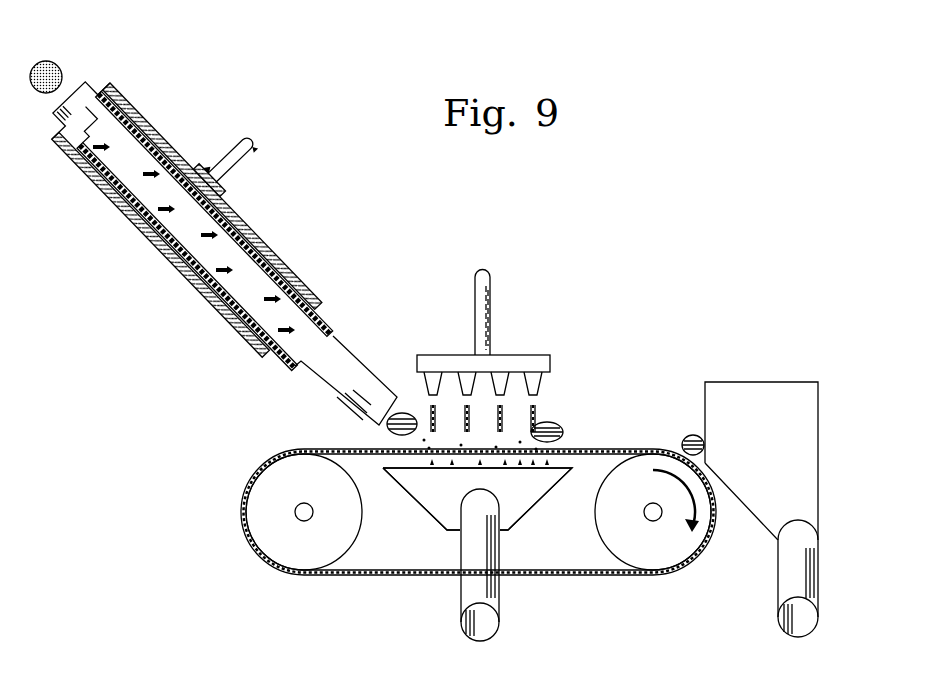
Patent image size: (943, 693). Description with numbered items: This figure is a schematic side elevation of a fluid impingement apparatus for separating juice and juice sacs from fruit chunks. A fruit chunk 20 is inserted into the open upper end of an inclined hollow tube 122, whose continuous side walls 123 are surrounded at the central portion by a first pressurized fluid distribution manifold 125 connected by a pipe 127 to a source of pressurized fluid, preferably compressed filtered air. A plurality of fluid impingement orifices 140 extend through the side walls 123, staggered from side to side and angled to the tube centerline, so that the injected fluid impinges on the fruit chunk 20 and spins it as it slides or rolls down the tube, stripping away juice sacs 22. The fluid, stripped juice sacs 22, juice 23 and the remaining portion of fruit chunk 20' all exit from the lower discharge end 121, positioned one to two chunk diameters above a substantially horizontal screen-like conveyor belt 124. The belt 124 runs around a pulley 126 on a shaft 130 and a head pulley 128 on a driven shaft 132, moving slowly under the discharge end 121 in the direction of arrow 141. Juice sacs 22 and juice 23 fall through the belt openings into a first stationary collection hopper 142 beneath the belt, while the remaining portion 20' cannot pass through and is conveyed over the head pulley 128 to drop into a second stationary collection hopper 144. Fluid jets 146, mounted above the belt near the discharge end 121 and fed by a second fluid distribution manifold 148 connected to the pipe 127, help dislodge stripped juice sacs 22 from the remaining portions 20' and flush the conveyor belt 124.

The fruit chunk 20 is at (47, 50).
The remaining portion of fruit chunk 20' is at (617, 438).
The juice sacs 22 is at (483, 468).
The juice 23 is at (483, 468).
The lower end (discharge end) of tube 121 is at (378, 436).
The inclined hollow tube 122 is at (320, 380).
The side walls 123 is at (318, 322).
The screen-like conveyor belt 124 is at (262, 457).
The first pressurized fluid distribution manifold 125 is at (130, 208).
The pulley 126 is at (270, 546).
The pipe 127 is at (238, 155).
The head pulley 128 is at (672, 556).
The shaft 130 is at (295, 512).
The shaft 132 is at (653, 521).
The fluid impingement orifices 140 is at (167, 165).
The arrow 141 is at (663, 470).
The first stationary collection hopper 142 is at (420, 480).
The second stationary collection hopper 144 is at (735, 390).
The fluid jets 146 is at (533, 390).
The second fluid distribution manifold 148 is at (547, 360).